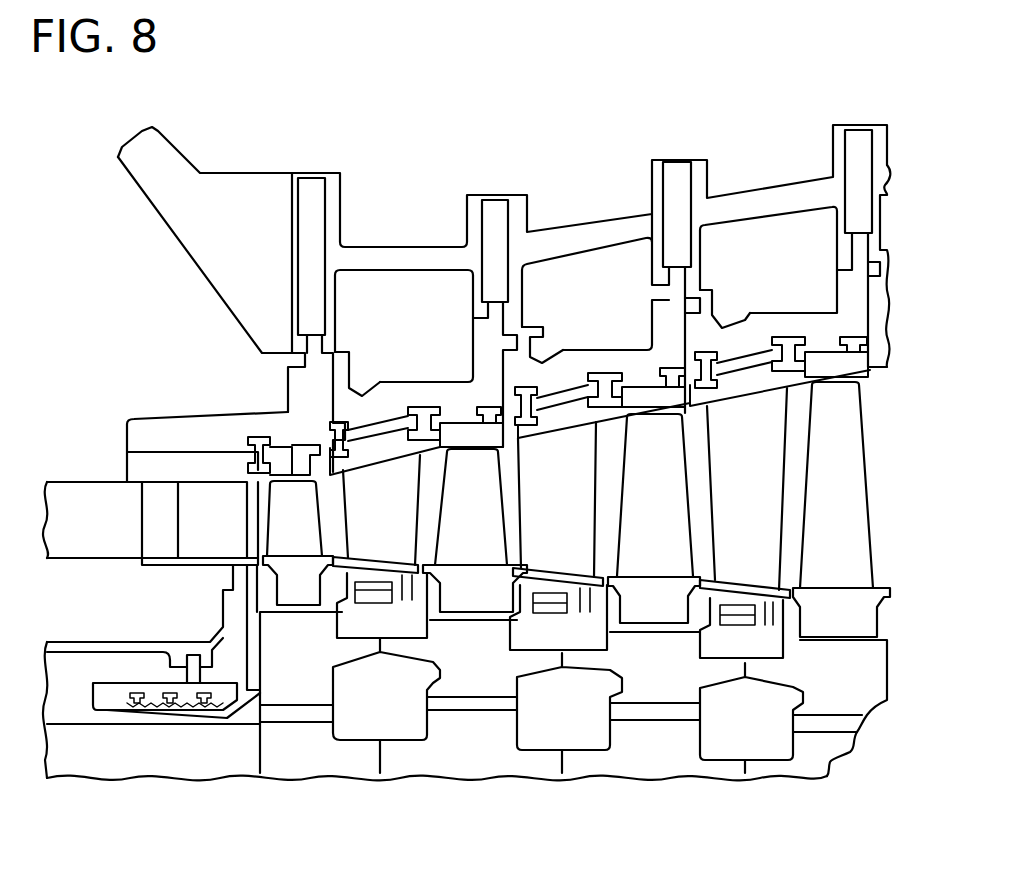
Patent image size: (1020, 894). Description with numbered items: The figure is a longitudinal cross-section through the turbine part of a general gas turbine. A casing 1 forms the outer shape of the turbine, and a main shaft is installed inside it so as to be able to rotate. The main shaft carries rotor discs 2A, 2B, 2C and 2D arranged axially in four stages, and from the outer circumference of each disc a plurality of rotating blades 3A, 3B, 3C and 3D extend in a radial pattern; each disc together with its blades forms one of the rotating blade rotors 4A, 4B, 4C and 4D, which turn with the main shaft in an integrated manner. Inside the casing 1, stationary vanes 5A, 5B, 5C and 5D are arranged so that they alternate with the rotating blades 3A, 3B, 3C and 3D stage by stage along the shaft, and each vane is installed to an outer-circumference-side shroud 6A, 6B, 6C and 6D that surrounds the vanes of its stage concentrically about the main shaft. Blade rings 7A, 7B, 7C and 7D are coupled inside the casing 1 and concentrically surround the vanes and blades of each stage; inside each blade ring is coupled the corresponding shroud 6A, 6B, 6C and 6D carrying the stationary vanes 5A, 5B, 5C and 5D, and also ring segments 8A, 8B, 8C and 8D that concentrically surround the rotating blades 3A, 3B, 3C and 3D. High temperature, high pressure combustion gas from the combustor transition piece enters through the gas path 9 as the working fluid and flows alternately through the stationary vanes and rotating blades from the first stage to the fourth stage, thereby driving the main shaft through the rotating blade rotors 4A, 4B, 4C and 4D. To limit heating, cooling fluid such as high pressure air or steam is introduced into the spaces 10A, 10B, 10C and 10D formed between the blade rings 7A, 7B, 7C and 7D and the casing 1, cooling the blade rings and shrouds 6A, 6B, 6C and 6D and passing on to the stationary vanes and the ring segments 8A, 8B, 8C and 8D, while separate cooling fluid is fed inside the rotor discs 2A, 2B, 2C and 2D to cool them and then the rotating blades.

The casing 1 is at (207, 180).
The space 10A is at (203, 270).
The space 10B is at (450, 280).
The space 10C is at (638, 250).
The space 10D is at (820, 217).
The blade ring 7A is at (237, 425).
The blade ring 7B is at (418, 388).
The blade ring 7C is at (603, 360).
The blade ring 7D is at (787, 323).
The outer-circumference-side shroud 6A is at (203, 455).
The outer-circumference-side shroud 6B is at (390, 447).
The outer-circumference-side shroud 6C is at (570, 410).
The outer-circumference-side shroud 6D is at (750, 380).
The ring segment 8A is at (284, 456).
The ring segment 8B is at (467, 447).
The ring segment 8C is at (653, 407).
The ring segment 8D is at (833, 377).
The gas path 9 is at (87, 480).
The stationary vane 5A is at (200, 523).
The stationary vane 5B is at (380, 546).
The stationary vane 5C is at (558, 536).
The stationary vane 5D is at (745, 523).
The rotating blade 3A is at (298, 543).
The rotating blade 3B is at (475, 534).
The rotating blade 3C is at (654, 523).
The rotating blade 3D is at (841, 509).
The rotor disc 2A is at (350, 737).
The rotor disc 2B is at (524, 758).
The rotor disc 2C is at (706, 763).
The rotor disc 2D is at (831, 751).
The rotating blade rotor 4A is at (300, 747).
The rotating blade rotor 4B is at (475, 747).
The rotating blade rotor 4C is at (652, 747).
The rotating blade rotor 4D is at (813, 747).